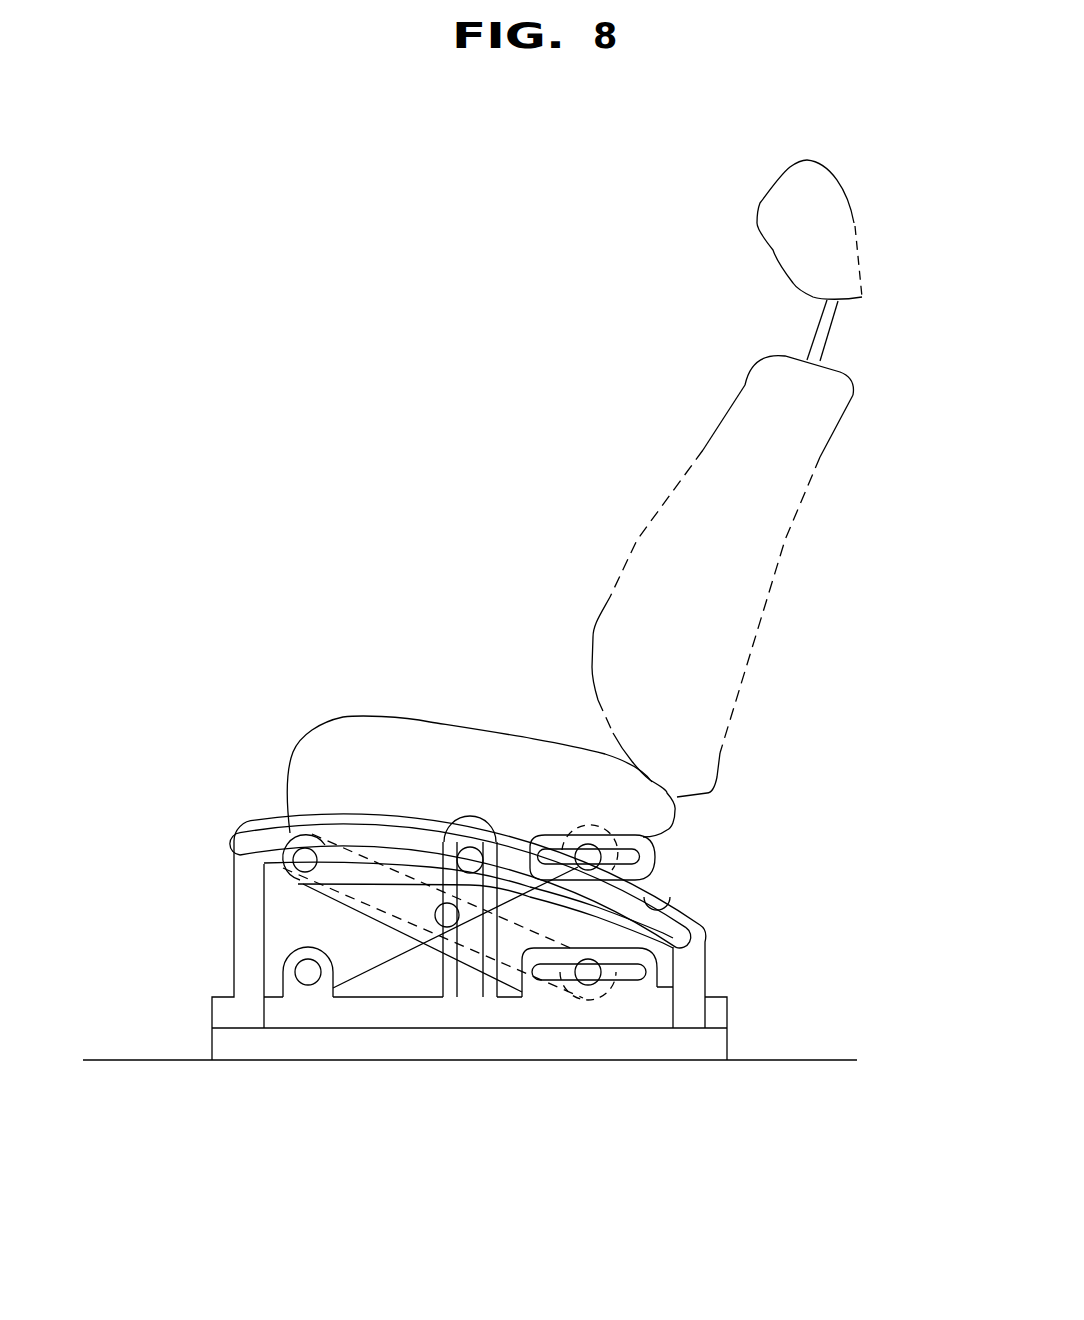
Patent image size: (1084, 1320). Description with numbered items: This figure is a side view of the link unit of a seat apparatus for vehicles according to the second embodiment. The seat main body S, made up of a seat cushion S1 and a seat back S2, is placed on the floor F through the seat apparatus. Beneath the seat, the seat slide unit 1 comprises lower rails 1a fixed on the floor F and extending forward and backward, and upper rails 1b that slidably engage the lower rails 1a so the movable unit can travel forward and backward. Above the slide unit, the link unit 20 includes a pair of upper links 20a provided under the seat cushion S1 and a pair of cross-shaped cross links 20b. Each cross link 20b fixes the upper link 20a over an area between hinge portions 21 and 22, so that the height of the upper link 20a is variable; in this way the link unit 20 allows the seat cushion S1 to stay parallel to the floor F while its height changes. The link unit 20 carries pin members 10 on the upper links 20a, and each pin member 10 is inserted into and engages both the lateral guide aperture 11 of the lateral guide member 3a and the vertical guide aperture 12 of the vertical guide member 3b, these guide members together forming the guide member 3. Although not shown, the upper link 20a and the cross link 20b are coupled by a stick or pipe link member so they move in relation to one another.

The seat slide unit 1 is at (210, 1030).
The lower rail 1a is at (400, 1045).
The upper rail 1b is at (375, 1015).
The guide member 3 is at (522, 887).
The lateral guide member 3a is at (668, 889).
The vertical guide member 3b is at (517, 990).
The pin member 10 is at (470, 857).
The lateral guide aperture 11 is at (667, 907).
The vertical guide aperture 12 is at (468, 987).
The link unit 20 is at (662, 847).
The upper link 20a is at (618, 838).
The cross link 20b is at (340, 947).
The hinge portion 21 is at (287, 958).
The hinge portion 22 is at (664, 988).
The seat main body S is at (657, 501).
The seat cushion S1 is at (304, 742).
The seat back S2 is at (803, 510).
The floor F is at (787, 1060).